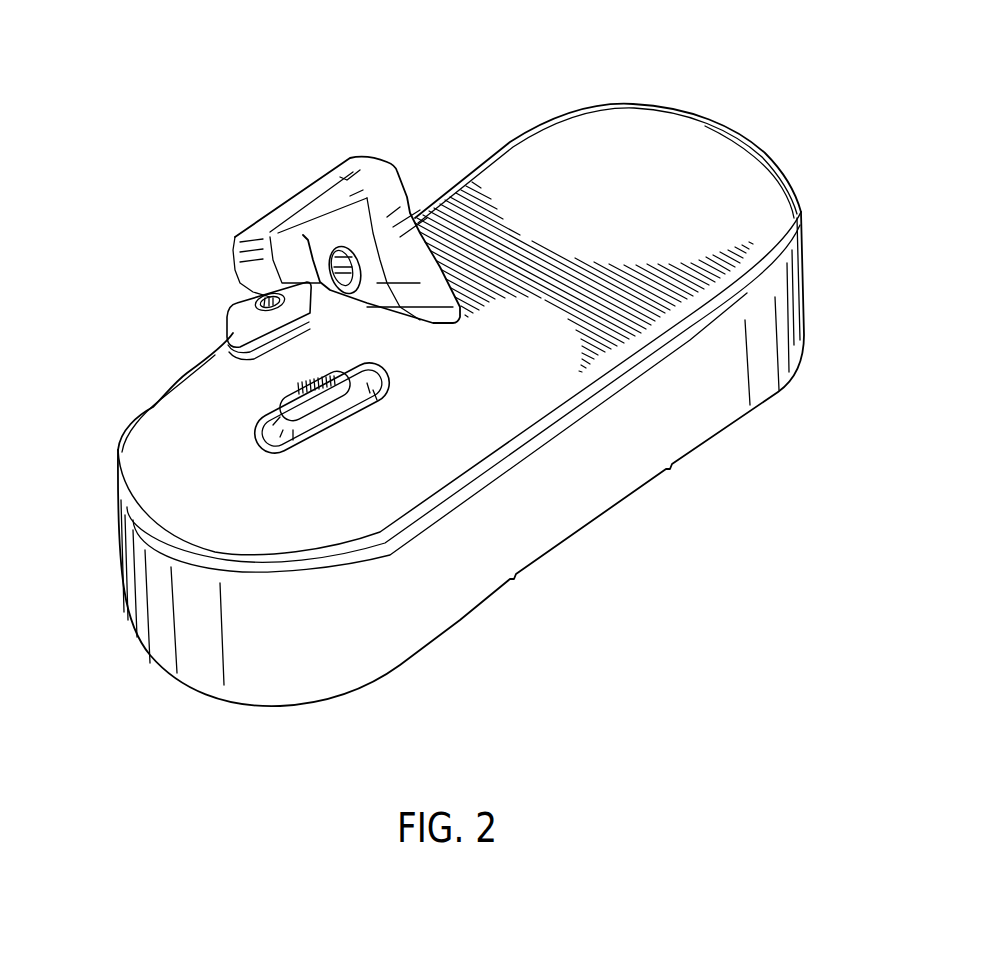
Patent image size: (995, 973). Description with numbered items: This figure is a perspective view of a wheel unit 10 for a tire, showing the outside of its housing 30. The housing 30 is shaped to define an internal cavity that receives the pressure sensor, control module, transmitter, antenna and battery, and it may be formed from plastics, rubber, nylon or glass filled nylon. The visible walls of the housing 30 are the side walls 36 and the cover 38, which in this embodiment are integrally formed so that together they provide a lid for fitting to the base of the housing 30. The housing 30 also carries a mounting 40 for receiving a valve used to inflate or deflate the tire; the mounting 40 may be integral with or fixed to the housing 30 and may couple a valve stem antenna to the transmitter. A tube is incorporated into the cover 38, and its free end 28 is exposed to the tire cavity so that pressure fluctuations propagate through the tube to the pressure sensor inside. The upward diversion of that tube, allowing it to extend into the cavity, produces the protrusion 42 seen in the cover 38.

The wheel unit 10 is at (755, 84).
The free end of tube 28 is at (262, 282).
The housing 30 is at (507, 140).
The side walls 36 is at (137, 542).
The cover 38 is at (733, 177).
The mounting 40 is at (311, 186).
The protrusion 42 is at (282, 400).